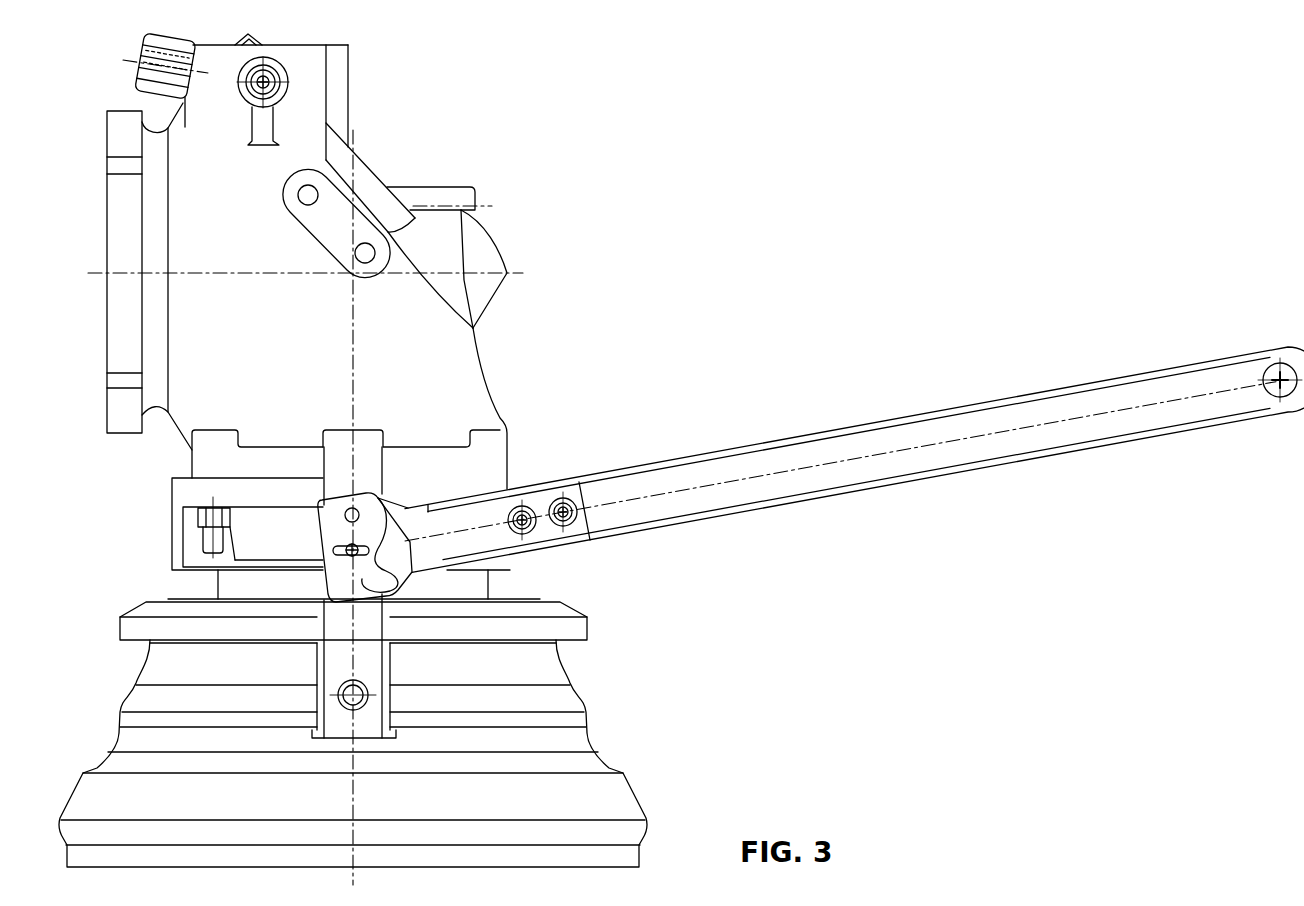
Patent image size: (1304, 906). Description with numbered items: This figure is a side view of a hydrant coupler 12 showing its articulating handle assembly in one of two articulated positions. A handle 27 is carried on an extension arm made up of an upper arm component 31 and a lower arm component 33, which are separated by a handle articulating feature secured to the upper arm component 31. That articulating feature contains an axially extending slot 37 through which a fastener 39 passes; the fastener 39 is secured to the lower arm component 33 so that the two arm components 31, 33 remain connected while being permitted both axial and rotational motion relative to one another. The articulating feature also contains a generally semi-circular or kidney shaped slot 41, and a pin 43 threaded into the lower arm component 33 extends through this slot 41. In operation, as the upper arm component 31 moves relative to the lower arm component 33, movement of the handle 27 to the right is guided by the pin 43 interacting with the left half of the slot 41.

The hydrant coupler 12 is at (532, 236).
The handle 27 is at (1276, 374).
The upper arm component 31 is at (945, 457).
The lower arm component 33 is at (337, 662).
The axially extending slot 37 is at (326, 525).
The fastener 39 is at (333, 551).
The kidney shaped slot 41 is at (404, 517).
The pin 43 is at (356, 510).